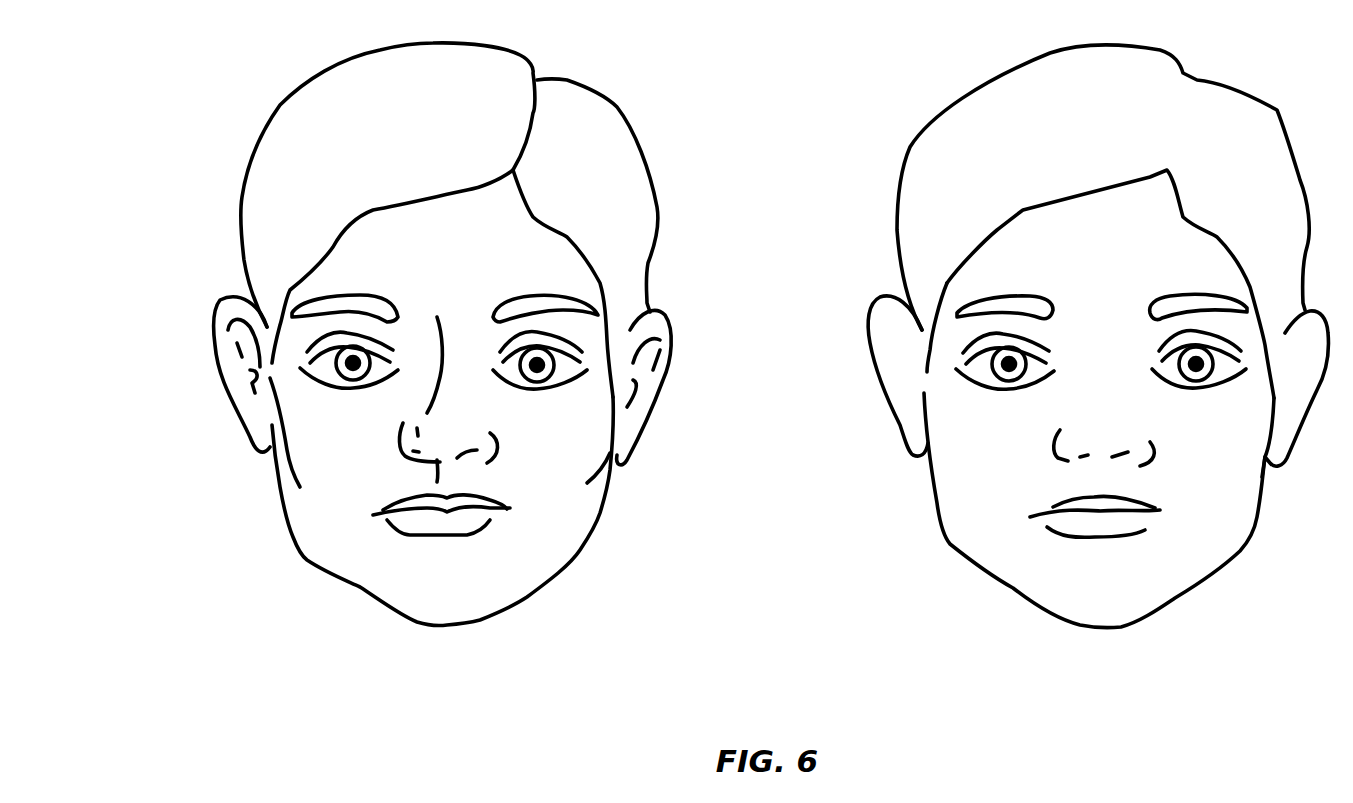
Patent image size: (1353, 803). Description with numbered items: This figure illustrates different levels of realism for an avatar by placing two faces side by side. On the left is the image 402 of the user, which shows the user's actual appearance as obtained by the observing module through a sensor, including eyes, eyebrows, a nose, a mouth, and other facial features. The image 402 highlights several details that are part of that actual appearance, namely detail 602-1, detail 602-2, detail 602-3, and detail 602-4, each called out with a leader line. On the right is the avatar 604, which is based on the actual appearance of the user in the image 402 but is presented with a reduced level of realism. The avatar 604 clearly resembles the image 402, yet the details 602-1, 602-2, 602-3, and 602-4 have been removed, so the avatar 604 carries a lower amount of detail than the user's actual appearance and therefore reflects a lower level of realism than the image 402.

The image of user 402 is at (461, 374).
The avatar 604 is at (850, 665).
The detail 602-1 is at (530, 117).
The detail 602-2 is at (440, 340).
The detail 602-3 is at (657, 370).
The detail 602-4 is at (287, 467).